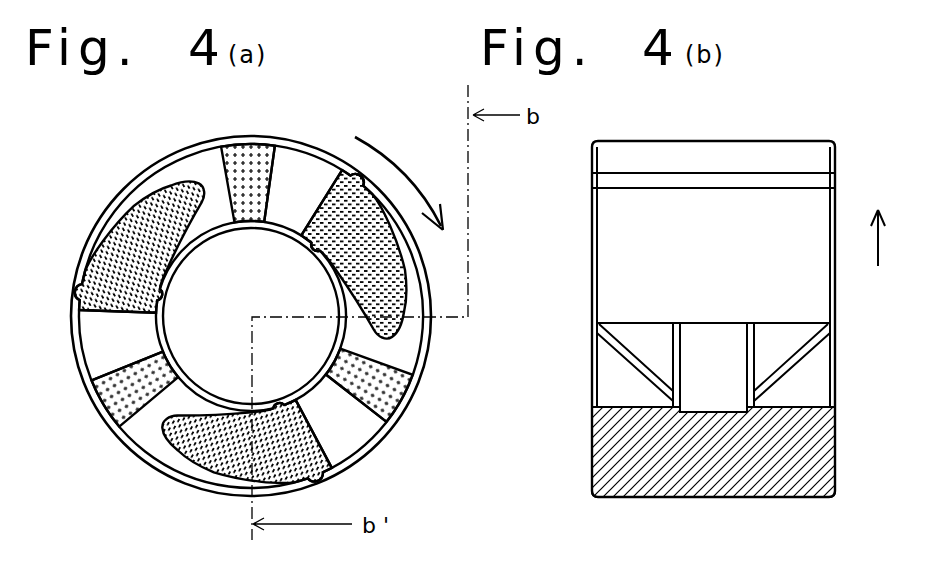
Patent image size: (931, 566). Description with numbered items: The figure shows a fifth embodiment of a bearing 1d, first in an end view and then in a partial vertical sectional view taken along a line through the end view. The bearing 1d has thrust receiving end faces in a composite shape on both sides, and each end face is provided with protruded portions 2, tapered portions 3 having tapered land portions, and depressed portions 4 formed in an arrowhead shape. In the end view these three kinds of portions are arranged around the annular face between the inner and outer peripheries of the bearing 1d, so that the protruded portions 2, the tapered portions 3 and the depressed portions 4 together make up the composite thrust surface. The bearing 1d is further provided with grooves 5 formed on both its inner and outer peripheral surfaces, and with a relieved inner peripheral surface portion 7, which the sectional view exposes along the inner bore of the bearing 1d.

In FIG. 4A, the bearing 1d is at (179, 137).
In FIG. 4B, the bearing 1d is at (664, 129).
In FIG. 4A, the protruded portions 2 is at (253, 148).
In FIG. 4A, the tapered portions 3 is at (305, 161).
In FIG. 4A, the depressed portions 4 is at (383, 262).
In FIG. 4A, the grooves 5 is at (357, 183).
In FIG. 4B, the grooves 5 is at (828, 184).
In FIG. 4B, the relieved inner peripheral surface portion 7 is at (704, 411).